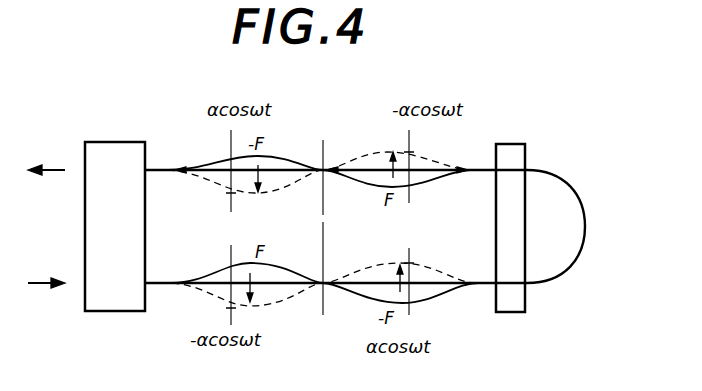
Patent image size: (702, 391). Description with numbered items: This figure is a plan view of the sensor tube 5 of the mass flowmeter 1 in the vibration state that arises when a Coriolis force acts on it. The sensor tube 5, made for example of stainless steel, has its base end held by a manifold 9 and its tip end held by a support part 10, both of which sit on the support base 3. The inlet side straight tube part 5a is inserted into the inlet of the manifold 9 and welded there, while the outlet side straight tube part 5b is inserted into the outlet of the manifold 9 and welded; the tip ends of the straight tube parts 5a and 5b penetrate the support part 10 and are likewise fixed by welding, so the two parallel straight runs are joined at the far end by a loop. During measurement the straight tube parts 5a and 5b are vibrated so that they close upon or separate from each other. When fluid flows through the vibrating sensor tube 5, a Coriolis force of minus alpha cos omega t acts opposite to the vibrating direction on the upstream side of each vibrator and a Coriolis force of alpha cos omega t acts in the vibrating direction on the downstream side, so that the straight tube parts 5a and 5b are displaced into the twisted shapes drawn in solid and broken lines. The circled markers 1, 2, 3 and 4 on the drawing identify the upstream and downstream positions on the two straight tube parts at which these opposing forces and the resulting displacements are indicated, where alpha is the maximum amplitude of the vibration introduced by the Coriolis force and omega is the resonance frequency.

The sensor tube 5 is at (380, 202).
The inlet side straight tube part 5a is at (339, 278).
The outlet side straight tube part 5b is at (343, 164).
The manifold 9 is at (107, 142).
The support part 10 is at (517, 144).
The mass flowmeter 1 is at (213, 318).
The position 2 is at (427, 320).
The support base 3 is at (393, 132).
The position 4 is at (205, 142).